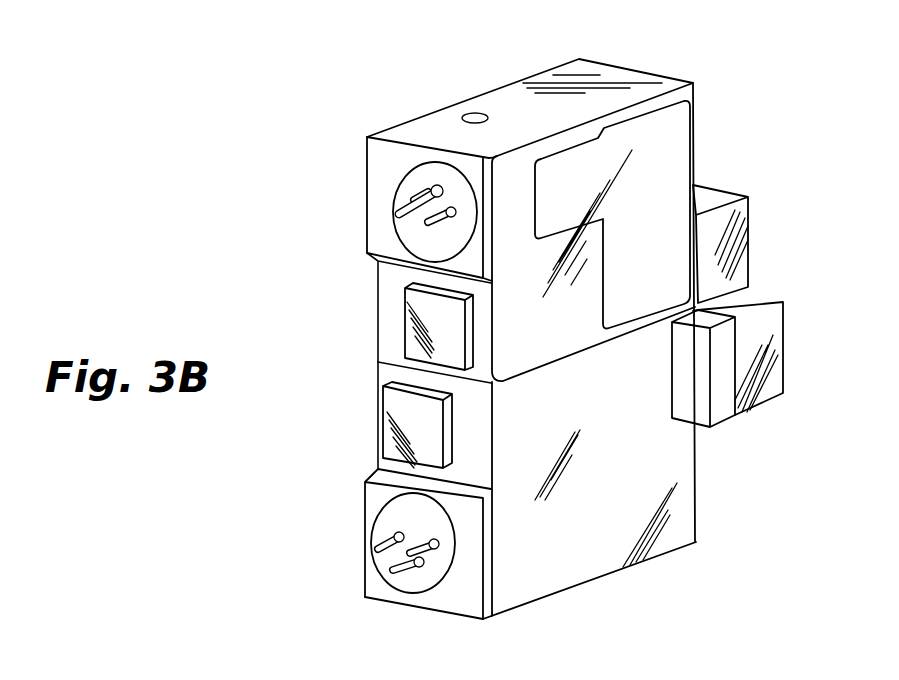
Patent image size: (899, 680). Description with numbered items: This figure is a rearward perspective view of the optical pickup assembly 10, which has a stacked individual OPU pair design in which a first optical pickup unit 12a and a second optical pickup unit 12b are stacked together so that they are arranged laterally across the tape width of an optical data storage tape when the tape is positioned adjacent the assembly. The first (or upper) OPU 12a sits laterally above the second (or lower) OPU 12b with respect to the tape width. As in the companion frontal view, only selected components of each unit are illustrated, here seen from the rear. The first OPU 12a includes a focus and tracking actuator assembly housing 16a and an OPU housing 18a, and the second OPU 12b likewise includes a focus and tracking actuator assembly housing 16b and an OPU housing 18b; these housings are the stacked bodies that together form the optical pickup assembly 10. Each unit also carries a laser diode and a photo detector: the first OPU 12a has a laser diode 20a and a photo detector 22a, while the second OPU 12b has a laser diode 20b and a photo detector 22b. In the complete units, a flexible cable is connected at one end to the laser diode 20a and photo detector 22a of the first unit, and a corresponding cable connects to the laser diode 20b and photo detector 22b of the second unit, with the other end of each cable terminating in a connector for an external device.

The optical pickup assembly 10 is at (737, 52).
The first optical pickup unit 12a is at (437, 82).
The second optical pickup unit 12b is at (595, 591).
The focus and tracking actuator assembly housing 16a is at (718, 187).
The focus and tracking actuator assembly housing 16b is at (760, 406).
The OPU housing 18a is at (652, 128).
The OPU housing 18b is at (660, 555).
The laser diode 20a is at (393, 228).
The laser diode 20b is at (377, 563).
The photo detector 22a is at (402, 333).
The photo detector 22b is at (385, 428).